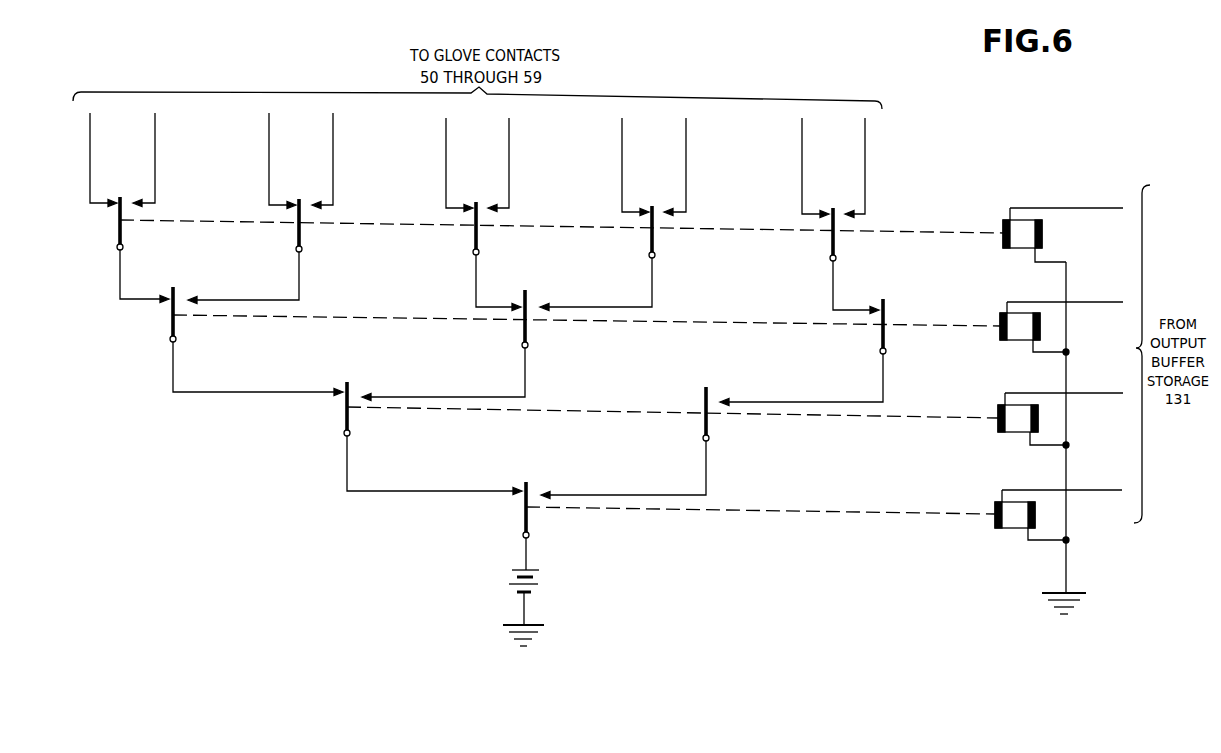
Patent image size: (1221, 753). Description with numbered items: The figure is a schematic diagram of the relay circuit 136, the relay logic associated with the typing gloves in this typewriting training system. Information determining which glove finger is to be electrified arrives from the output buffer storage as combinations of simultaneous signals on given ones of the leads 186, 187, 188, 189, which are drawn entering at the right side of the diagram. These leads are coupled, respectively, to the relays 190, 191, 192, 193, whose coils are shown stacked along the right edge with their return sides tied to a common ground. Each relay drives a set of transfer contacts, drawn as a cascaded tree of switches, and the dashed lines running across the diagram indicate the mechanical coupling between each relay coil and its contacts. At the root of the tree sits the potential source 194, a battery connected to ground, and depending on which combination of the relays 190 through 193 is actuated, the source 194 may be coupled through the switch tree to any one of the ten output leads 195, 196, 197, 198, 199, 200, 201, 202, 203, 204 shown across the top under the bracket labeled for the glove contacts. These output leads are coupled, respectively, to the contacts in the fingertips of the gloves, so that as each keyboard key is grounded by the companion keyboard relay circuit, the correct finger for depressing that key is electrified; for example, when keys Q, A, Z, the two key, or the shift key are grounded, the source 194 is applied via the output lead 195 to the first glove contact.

The relay circuit 136 is at (284, 556).
The lead 186 is at (1108, 490).
The lead 187 is at (1110, 393).
The lead 188 is at (1110, 302).
The lead 189 is at (1068, 208).
The relay 190 is at (995, 528).
The relay 191 is at (998, 432).
The relay 192 is at (1000, 340).
The relay 193 is at (1003, 248).
The potential source 194 is at (512, 570).
The output lead 195 is at (90, 136).
The output lead 196 is at (155, 136).
The output lead 197 is at (269, 138).
The output lead 198 is at (333, 138).
The output lead 199 is at (446, 140).
The output lead 200 is at (509, 140).
The output lead 201 is at (622, 140).
The output lead 202 is at (686, 140).
The output lead 203 is at (802, 140).
The output lead 204 is at (865, 140).